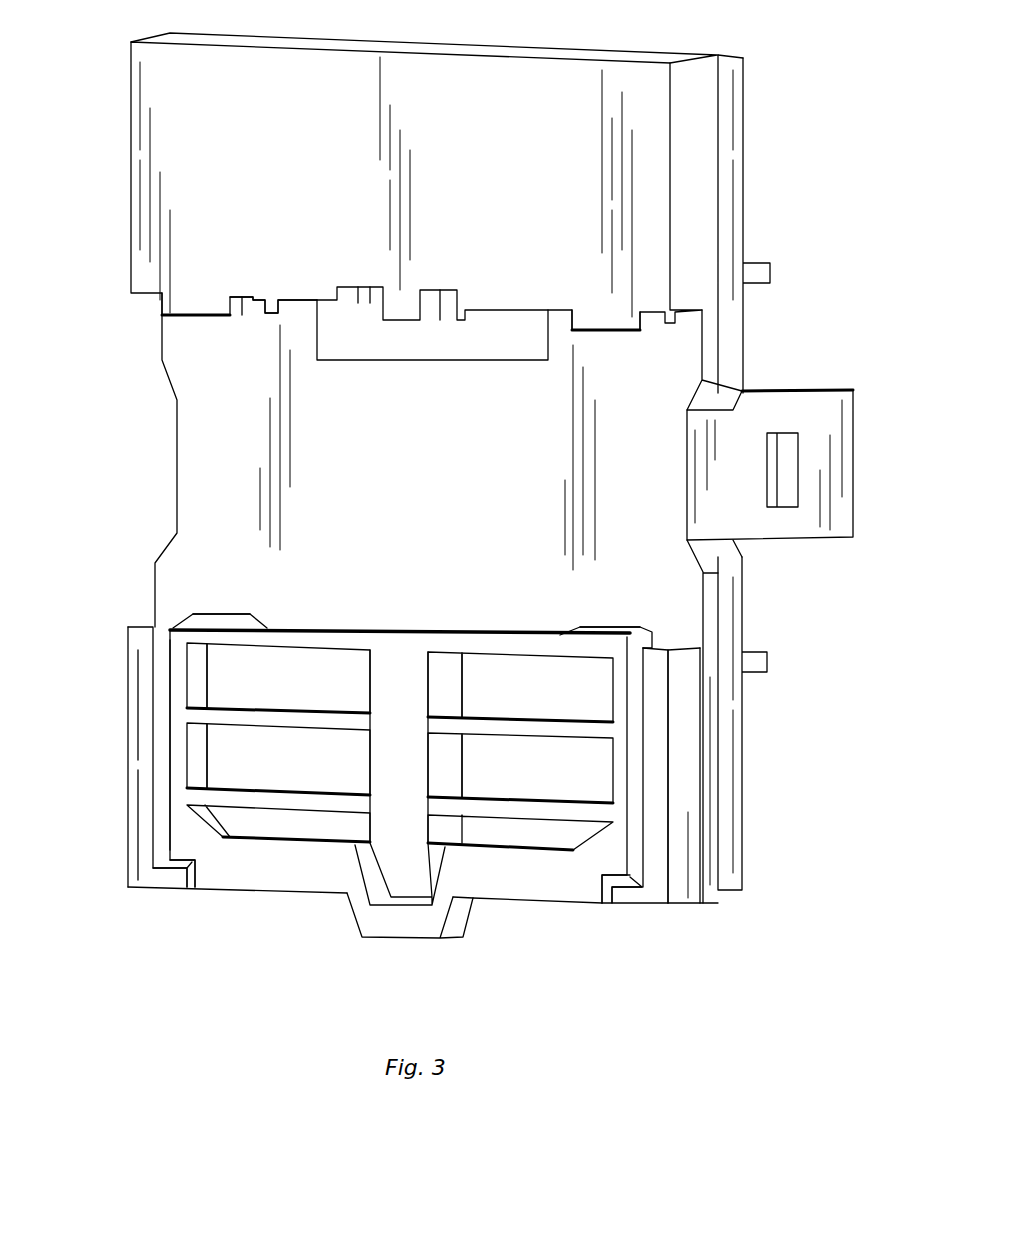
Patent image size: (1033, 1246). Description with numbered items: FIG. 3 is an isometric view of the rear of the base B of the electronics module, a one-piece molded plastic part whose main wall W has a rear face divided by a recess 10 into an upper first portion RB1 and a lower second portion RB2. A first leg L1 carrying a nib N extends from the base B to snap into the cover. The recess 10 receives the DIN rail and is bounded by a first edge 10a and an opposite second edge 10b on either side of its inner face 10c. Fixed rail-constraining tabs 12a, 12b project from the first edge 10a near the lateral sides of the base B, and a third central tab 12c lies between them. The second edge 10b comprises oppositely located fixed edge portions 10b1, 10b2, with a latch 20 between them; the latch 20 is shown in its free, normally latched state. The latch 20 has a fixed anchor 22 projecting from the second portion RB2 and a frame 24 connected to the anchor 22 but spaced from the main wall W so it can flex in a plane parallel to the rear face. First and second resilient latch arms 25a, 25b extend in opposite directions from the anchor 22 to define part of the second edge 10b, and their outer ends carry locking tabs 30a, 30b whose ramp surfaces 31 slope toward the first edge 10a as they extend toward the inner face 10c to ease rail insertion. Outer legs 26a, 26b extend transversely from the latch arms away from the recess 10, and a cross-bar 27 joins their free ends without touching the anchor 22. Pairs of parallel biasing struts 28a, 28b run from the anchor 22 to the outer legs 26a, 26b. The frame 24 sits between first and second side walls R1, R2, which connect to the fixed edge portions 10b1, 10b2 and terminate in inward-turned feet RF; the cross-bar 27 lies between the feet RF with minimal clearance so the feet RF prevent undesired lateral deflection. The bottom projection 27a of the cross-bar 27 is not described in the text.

The recess 10 is at (232, 431).
The first portion of the rear face RB1 is at (262, 132).
The base B is at (712, 184).
The main wall W is at (713, 338).
The first leg L1 is at (813, 417).
The nib N is at (787, 495).
The first edge of the recess 10a is at (283, 313).
The second fixed DIN rail-constraining tab 12b is at (200, 305).
The third fixed rail-constraining tab 12c is at (400, 318).
The first fixed DIN rail-constraining tab 12a is at (610, 328).
The inner face of the recess 10c is at (461, 472).
The second edge of the recess 10b is at (389, 622).
The frame 24 is at (333, 622).
The ramp surface 31 is at (207, 620).
The second locking tab 30b is at (240, 617).
The first locking tab 30a is at (612, 630).
The second fixed edge portion 10b2 is at (143, 627).
The first fixed edge portion 10b1 is at (677, 647).
The second portion of the rear face RB2 is at (248, 692).
The second latch arm 25b is at (283, 643).
The biasing struts 28b is at (340, 708).
The second outer leg 26b is at (193, 758).
The anchor 22 is at (416, 765).
The first latch arm 25a is at (533, 652).
The biasing struts 28a is at (530, 717).
The first outer leg 26a is at (610, 763).
The latch 20 is at (295, 872).
The first side wall R1 is at (140, 808).
The second side wall R2 is at (707, 799).
The feet RF is at (162, 884).
The cross-bar 27 is at (533, 889).
The bottom projection 27a is at (383, 941).